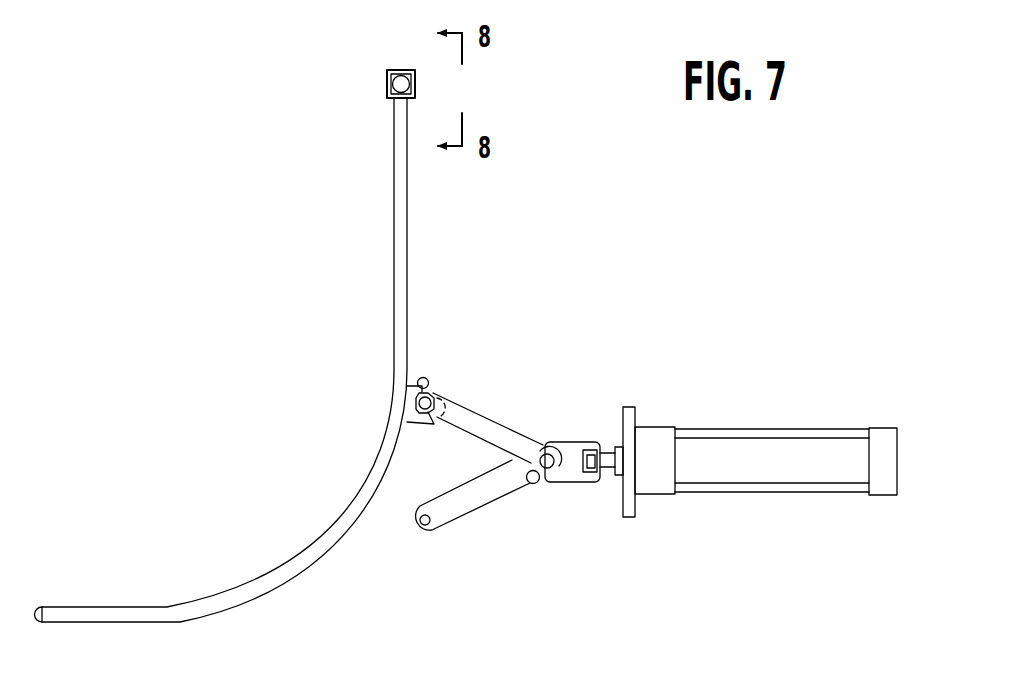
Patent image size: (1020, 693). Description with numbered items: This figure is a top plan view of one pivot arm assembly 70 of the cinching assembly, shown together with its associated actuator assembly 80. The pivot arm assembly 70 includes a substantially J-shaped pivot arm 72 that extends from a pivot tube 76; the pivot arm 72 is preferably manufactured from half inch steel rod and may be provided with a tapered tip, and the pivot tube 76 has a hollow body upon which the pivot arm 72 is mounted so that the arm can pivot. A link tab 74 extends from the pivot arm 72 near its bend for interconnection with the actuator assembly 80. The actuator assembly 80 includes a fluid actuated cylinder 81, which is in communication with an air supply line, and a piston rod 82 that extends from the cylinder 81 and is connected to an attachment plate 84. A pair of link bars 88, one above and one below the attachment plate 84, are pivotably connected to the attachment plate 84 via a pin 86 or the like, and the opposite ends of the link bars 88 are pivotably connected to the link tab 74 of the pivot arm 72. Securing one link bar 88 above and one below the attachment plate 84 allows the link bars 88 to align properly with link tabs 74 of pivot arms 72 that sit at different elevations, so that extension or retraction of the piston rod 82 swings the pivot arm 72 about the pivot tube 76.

The pivot arm assembly 70 is at (297, 100).
The pivot arm 72 is at (397, 215).
The link tab 74 is at (431, 387).
The pivot tube 76 is at (384, 68).
The actuator assembly 80 is at (723, 533).
The fluid actuated cylinder 81 is at (772, 428).
The piston rod 82 is at (607, 450).
The attachment plate 84 is at (573, 441).
The pin 86 is at (437, 390).
The link bar 88 is at (490, 430).